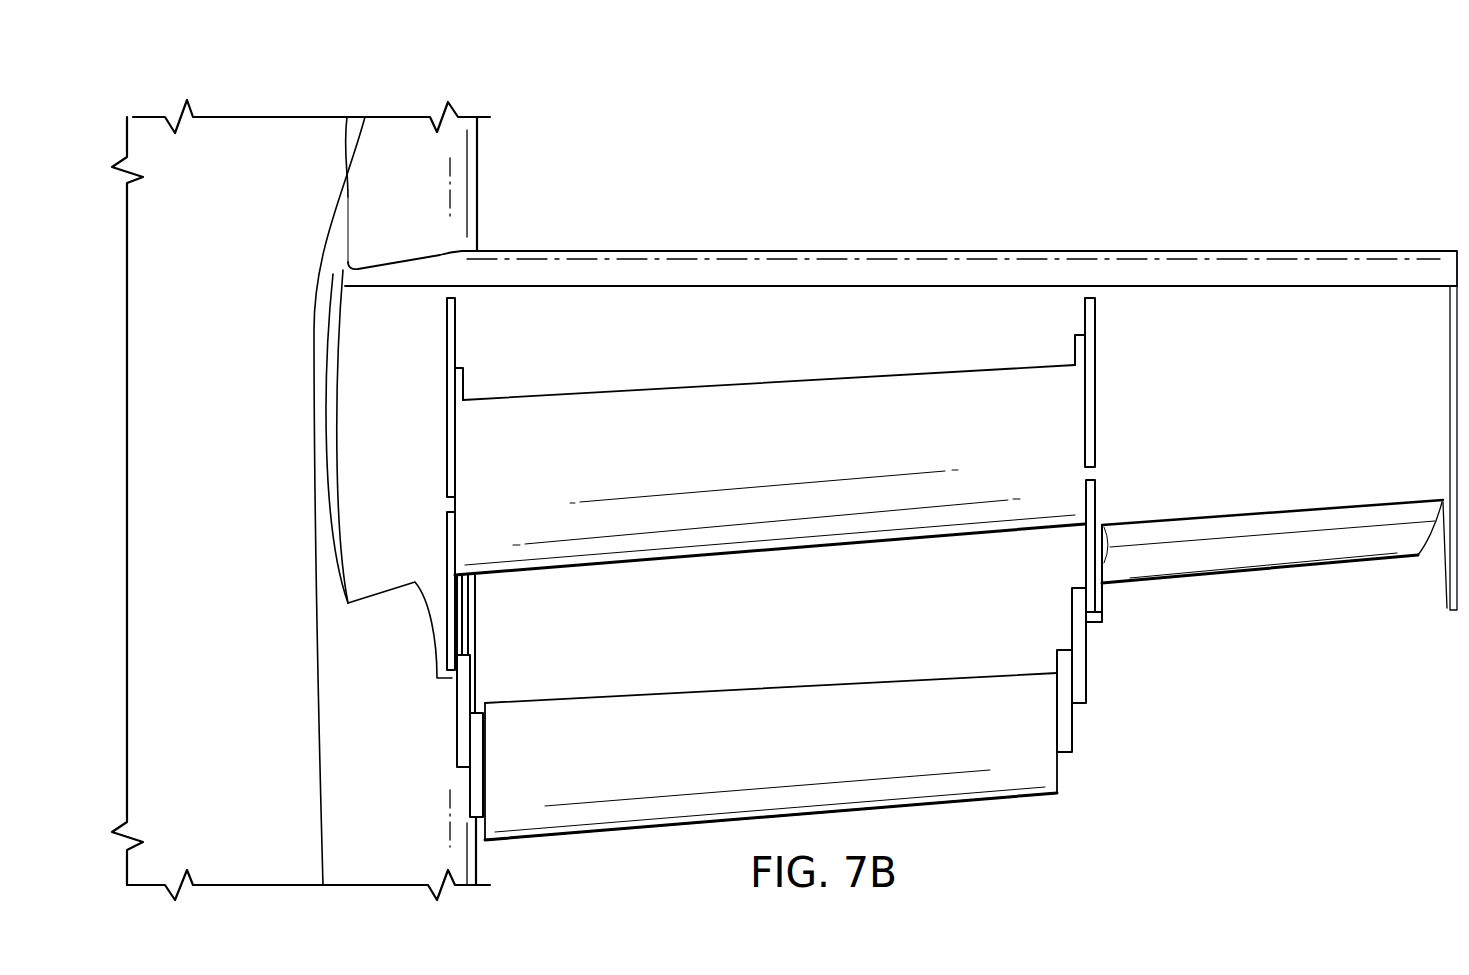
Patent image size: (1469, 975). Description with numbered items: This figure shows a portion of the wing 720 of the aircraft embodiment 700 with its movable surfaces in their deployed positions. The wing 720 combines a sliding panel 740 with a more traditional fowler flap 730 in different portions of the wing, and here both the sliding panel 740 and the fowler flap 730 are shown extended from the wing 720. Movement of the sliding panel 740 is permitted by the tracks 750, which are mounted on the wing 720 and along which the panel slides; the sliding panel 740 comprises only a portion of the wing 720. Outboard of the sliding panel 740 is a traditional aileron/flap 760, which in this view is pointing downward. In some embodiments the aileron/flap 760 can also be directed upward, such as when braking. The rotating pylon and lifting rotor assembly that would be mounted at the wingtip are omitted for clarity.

The aircraft embodiment 700 is at (237, 94).
The wing 720 is at (1169, 250).
The fowler flap 730 is at (968, 800).
The sliding panel 740 is at (626, 418).
The tracks 750 is at (445, 382).
The aileron/flap 760 is at (1272, 570).